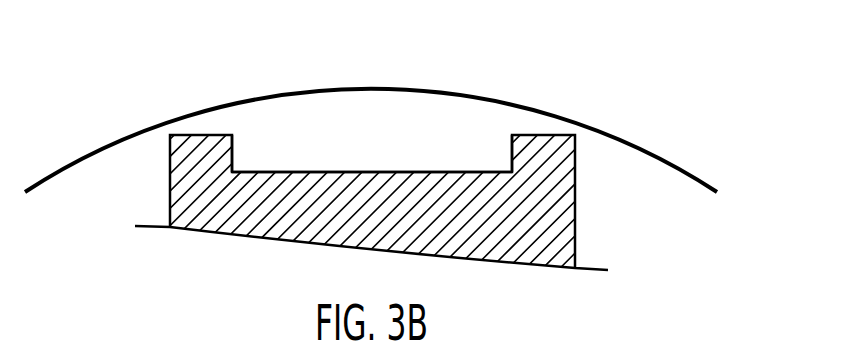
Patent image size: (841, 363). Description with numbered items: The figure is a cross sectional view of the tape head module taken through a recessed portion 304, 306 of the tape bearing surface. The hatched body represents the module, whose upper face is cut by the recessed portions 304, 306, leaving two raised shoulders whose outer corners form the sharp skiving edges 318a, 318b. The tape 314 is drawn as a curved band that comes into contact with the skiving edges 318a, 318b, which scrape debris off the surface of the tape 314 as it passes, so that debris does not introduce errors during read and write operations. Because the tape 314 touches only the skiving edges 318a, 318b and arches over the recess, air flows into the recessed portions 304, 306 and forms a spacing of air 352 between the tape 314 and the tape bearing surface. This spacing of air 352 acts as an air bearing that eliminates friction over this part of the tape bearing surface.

The tape 314 is at (77, 163).
The skiving edge 318a is at (163, 127).
The skiving edge 318b is at (578, 132).
The spacing of air 352 is at (273, 133).
The recessed portion 304 is at (372, 99).
The recessed portion 306 is at (395, 144).